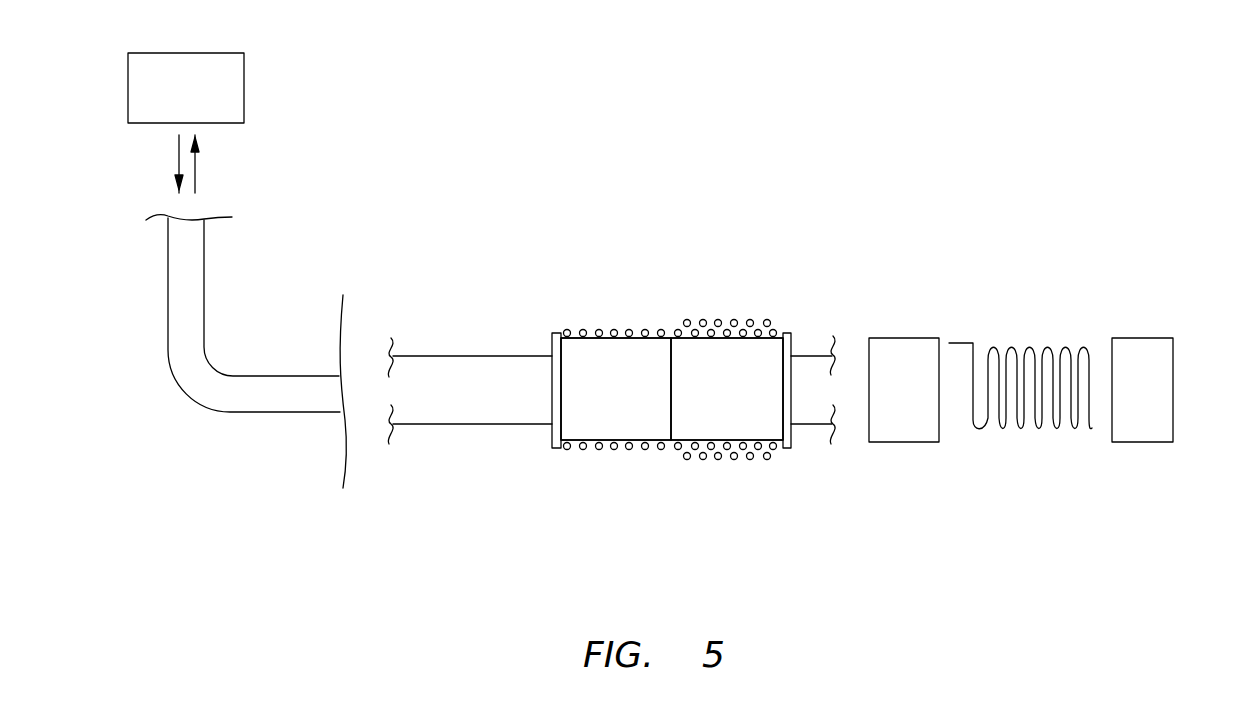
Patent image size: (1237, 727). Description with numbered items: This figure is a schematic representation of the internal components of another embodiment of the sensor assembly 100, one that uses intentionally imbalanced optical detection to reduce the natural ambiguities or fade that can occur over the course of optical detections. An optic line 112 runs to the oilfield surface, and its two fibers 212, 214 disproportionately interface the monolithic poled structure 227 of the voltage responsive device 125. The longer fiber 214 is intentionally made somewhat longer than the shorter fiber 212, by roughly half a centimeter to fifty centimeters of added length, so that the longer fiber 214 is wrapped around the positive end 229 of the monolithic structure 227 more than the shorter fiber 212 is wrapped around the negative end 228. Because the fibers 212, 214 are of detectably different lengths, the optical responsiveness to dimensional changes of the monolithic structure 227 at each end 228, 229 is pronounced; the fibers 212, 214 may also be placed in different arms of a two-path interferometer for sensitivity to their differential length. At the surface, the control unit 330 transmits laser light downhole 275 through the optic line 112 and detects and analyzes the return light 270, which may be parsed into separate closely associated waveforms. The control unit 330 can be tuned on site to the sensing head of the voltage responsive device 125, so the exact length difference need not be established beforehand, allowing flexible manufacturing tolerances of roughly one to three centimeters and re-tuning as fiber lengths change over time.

The sensor assembly 100 is at (863, 138).
The optic line 112 is at (233, 402).
The voltage responsive device 125 is at (660, 475).
The shorter fiber 212 is at (478, 353).
The longer fiber 214 is at (448, 426).
The monolithic poled structure 227 is at (670, 303).
The negative end 228 is at (595, 401).
The positive end 229 is at (706, 401).
The return light 270 is at (197, 180).
The laser light transmitted downhole 275 is at (177, 168).
The control unit 330 is at (166, 101).